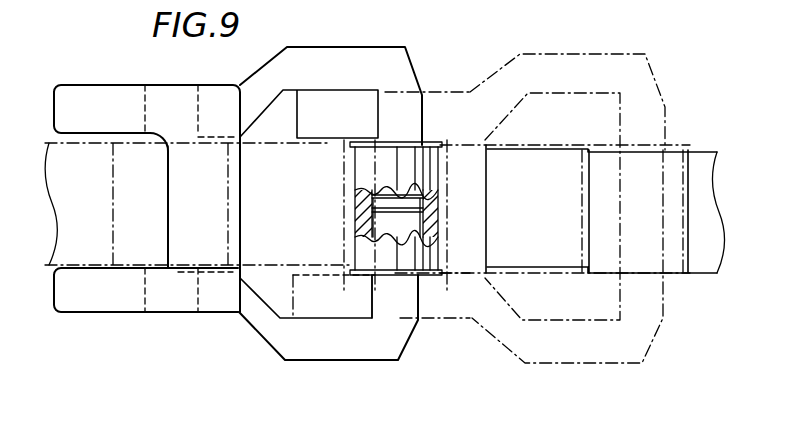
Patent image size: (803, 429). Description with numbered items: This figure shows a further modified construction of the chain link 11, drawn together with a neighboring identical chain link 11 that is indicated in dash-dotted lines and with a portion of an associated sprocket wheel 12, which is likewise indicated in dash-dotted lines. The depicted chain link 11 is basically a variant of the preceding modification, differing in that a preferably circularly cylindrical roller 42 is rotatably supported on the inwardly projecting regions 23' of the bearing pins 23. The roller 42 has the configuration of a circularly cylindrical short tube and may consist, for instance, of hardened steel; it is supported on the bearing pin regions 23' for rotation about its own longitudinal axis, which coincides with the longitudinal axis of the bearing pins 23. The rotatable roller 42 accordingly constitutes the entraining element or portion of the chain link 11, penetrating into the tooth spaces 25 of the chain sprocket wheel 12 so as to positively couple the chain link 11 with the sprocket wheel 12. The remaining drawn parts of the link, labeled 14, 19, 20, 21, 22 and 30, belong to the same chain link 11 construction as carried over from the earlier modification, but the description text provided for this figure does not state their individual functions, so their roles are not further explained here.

The chain link 11 is at (86, 82).
The sprocket wheel 12 is at (716, 276).
The bridging portion 14 is at (263, 79).
The slot 19 is at (201, 118).
The flange 20 is at (130, 99).
The flange leg 21 is at (100, 121).
The web wall 22 is at (218, 198).
The bearing pin 23 is at (423, 215).
The inwardly projecting region of bearing pin 23' is at (597, 208).
The tooth space 25 is at (348, 258).
The side wall 30 is at (178, 95).
The roller 42 is at (384, 163).